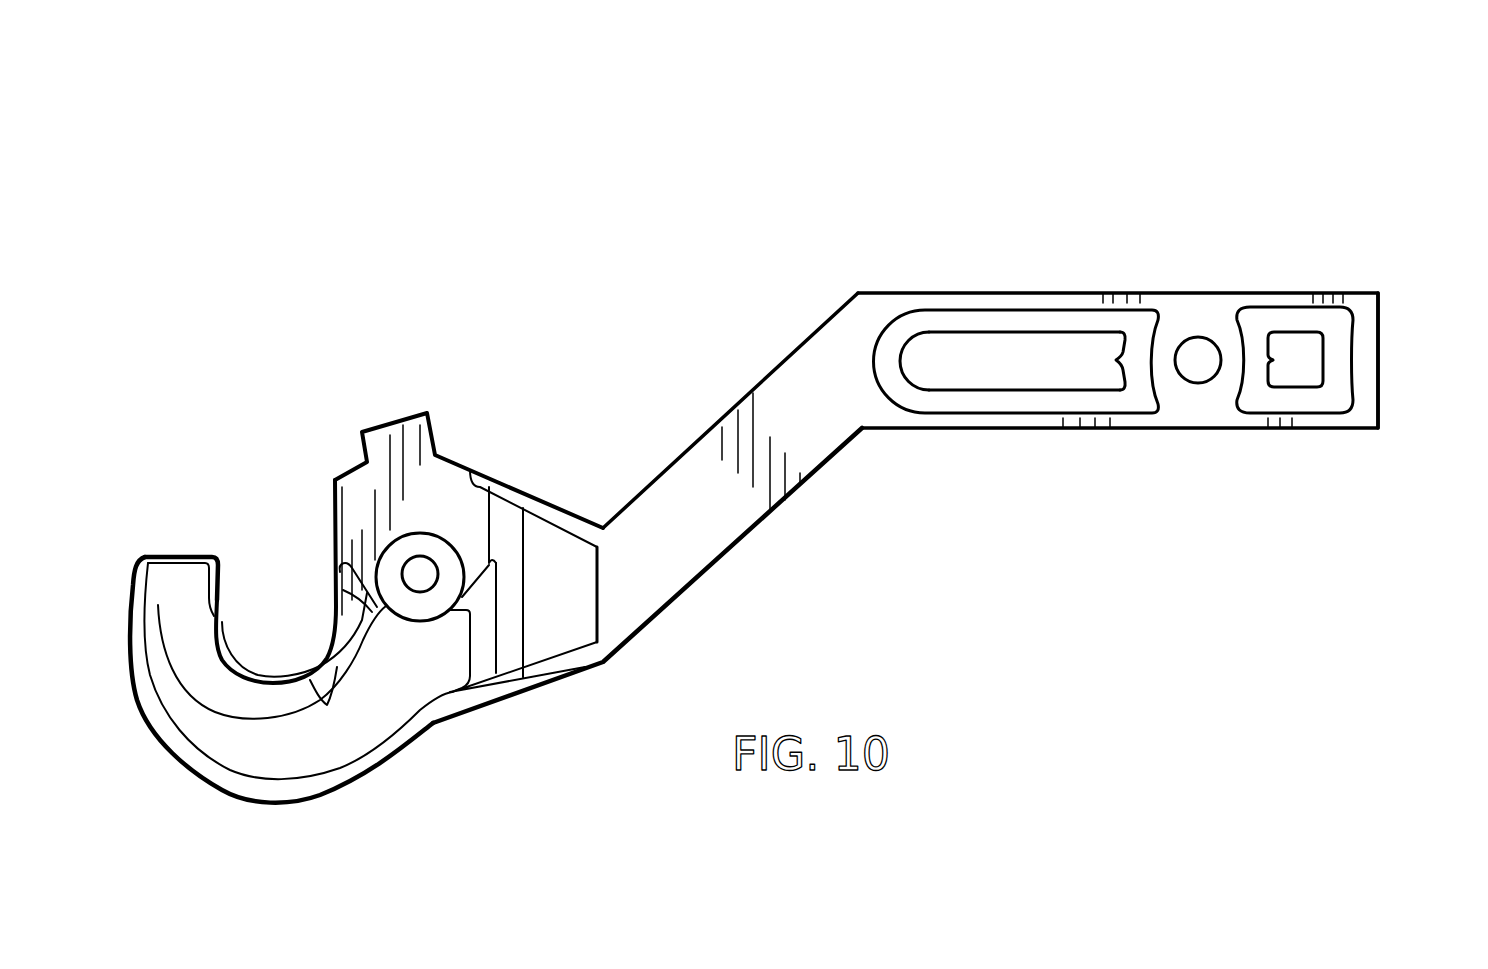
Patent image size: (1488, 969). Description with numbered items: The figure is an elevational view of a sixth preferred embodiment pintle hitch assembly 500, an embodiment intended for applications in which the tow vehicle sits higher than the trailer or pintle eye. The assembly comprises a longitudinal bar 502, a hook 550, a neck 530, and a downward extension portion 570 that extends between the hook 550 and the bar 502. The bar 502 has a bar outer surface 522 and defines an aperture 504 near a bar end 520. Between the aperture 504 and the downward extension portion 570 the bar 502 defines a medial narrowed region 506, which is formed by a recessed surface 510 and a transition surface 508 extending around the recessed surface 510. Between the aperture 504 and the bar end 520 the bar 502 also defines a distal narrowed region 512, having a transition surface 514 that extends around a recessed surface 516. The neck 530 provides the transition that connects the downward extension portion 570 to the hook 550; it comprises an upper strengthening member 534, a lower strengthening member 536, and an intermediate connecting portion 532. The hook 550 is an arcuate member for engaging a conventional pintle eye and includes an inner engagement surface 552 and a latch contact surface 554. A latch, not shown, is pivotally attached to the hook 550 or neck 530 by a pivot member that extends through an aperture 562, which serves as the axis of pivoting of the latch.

The pintle hitch assembly 500 is at (1293, 145).
The longitudinal bar 502 is at (1098, 300).
The aperture 504 is at (1183, 357).
The medial narrowed region 506 is at (923, 372).
The transition surface 508 is at (978, 403).
The recessed surface 510 is at (1105, 372).
The distal narrowed region 512 is at (1288, 370).
The transition surface 514 is at (1335, 313).
The recessed surface 516 is at (1283, 336).
The bar end 520 is at (1380, 357).
The bar outer surface 522 is at (913, 300).
The neck 530 is at (512, 498).
The intermediate connecting portion 532 is at (533, 642).
The upper strengthening member 534 is at (586, 527).
The lower strengthening member 536 is at (590, 658).
The hook 550 is at (297, 763).
The inner engagement surface 552 is at (247, 668).
The latch contact surface 554 is at (170, 557).
The aperture 562 is at (416, 572).
The downward extension portion 570 is at (800, 370).